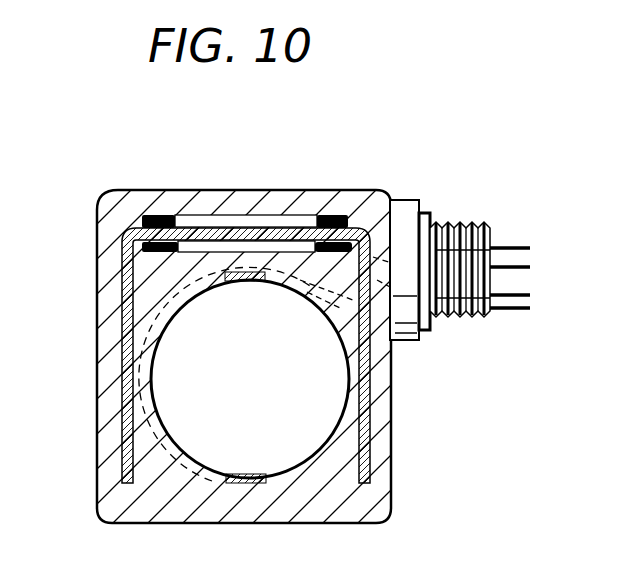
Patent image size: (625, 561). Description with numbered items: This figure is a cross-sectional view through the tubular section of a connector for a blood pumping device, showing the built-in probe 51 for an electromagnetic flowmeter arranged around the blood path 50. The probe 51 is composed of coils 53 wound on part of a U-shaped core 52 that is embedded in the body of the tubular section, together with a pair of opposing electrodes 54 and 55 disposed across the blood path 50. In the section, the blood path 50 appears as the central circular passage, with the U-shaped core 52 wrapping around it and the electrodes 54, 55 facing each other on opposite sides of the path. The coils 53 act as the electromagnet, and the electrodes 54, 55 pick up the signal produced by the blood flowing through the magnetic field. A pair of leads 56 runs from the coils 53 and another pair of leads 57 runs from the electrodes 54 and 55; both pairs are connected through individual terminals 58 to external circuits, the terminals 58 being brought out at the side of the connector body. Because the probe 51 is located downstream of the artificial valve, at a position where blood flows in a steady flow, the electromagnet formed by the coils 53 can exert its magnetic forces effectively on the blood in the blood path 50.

The blood path 50 is at (270, 397).
The probe 51 is at (96, 207).
The U-shaped core 52 is at (247, 237).
The coils 53 is at (150, 215).
The electrode 54 is at (238, 283).
The electrode 55 is at (243, 473).
The leads 56 is at (408, 245).
The leads 57 is at (409, 342).
The terminals 58 is at (540, 240).